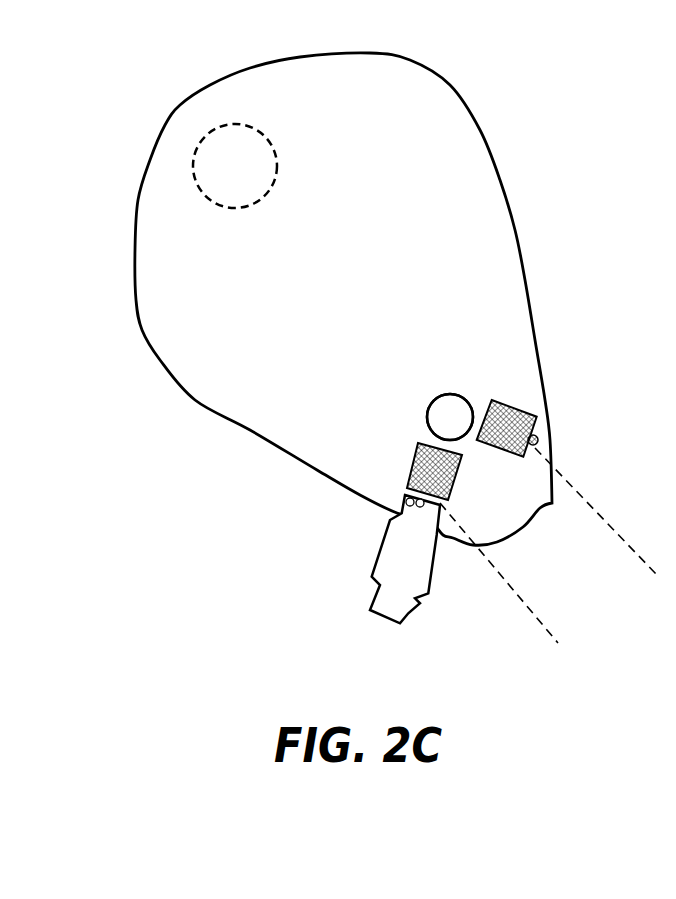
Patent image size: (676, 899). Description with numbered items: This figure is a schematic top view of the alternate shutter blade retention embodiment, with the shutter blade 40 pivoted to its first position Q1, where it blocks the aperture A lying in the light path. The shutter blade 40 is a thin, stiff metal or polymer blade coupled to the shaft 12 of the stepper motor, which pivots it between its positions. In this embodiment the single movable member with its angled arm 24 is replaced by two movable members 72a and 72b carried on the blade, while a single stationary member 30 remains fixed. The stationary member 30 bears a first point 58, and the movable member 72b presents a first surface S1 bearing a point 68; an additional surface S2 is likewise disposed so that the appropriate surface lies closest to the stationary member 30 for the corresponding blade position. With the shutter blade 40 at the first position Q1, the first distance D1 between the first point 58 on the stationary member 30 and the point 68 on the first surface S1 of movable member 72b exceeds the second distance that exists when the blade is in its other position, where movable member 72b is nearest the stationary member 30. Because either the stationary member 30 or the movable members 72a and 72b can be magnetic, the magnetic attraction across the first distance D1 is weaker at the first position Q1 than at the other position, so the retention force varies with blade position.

The first position Q1 is at (158, 41).
The aperture A is at (235, 137).
The shutter blade 40 is at (215, 335).
The angled arm 24 is at (465, 393).
The shaft 12 is at (427, 410).
The movable member 72a is at (408, 467).
The movable member 72b is at (497, 402).
The point 68 is at (540, 440).
The first surface S1 is at (522, 457).
The second surface S2 is at (400, 492).
The first point 58 is at (392, 512).
The stationary member 30 is at (418, 579).
The first distance D1 is at (647, 563).